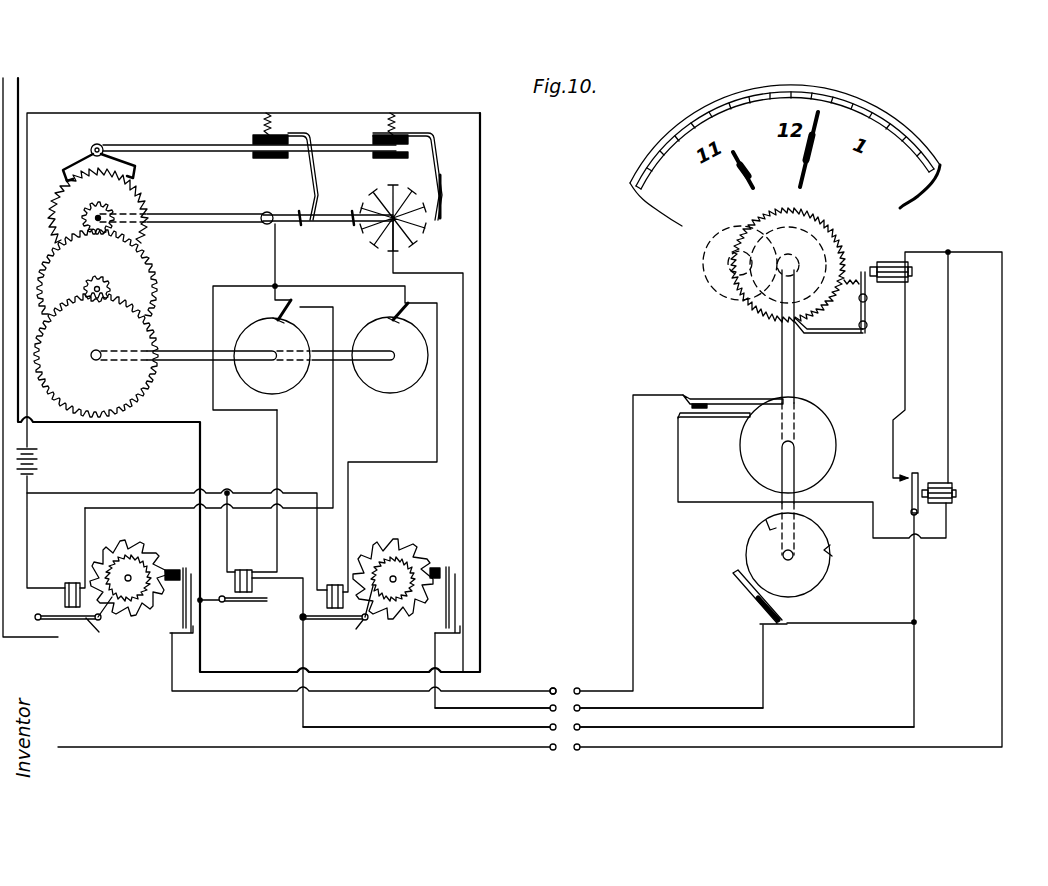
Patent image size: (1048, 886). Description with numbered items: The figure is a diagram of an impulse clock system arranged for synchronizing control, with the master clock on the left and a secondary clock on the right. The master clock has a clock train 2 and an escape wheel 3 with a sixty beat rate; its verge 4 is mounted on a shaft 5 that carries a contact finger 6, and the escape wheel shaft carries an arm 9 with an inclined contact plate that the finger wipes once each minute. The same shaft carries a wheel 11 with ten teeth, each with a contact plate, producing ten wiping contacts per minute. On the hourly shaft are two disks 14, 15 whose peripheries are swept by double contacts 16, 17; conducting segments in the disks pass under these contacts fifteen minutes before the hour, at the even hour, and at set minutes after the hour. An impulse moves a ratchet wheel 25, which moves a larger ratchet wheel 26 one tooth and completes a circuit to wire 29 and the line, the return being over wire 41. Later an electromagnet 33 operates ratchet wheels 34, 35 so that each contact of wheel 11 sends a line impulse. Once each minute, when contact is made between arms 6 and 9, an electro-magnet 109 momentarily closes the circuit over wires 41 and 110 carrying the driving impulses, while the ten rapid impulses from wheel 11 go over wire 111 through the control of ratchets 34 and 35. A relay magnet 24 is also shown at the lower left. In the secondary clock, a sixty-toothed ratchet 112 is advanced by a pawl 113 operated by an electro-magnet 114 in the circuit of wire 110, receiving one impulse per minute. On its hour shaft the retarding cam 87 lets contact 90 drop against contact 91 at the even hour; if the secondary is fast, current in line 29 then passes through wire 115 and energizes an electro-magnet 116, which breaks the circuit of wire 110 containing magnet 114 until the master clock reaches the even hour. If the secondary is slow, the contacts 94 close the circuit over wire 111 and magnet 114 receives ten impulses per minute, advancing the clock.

The clock train 2 is at (150, 292).
The escape wheel 3 is at (140, 205).
The verge 4 is at (90, 148).
The shaft 5 is at (200, 147).
The contact finger 6 is at (306, 136).
The arm 9 is at (283, 212).
The wheel 11 is at (423, 240).
The disk 14 is at (296, 380).
The disk 15 is at (391, 390).
The double contacts 16 is at (290, 318).
The double contacts 17 is at (400, 318).
The relay magnet 24 is at (73, 594).
The ratchet wheel 25 is at (130, 595).
The ratchet wheel 26 is at (140, 555).
The wire 29 is at (520, 690).
The electromagnet 33 is at (336, 592).
The ratchet wheel 34 is at (392, 590).
The ratchet wheel 35 is at (408, 545).
The wire 41 is at (295, 748).
The retarding cam 87 is at (822, 416).
The contact 90 is at (760, 398).
The contact 91 is at (710, 416).
The contacts 94 is at (745, 610).
The electromagnet 109 is at (245, 575).
The wire 110 is at (303, 720).
The wire 111 is at (432, 708).
The ratchet 112 is at (748, 312).
The pawl 113 is at (825, 330).
The electromagnet 114 is at (893, 268).
The wire 115 is at (710, 502).
The electromagnet 116 is at (945, 485).